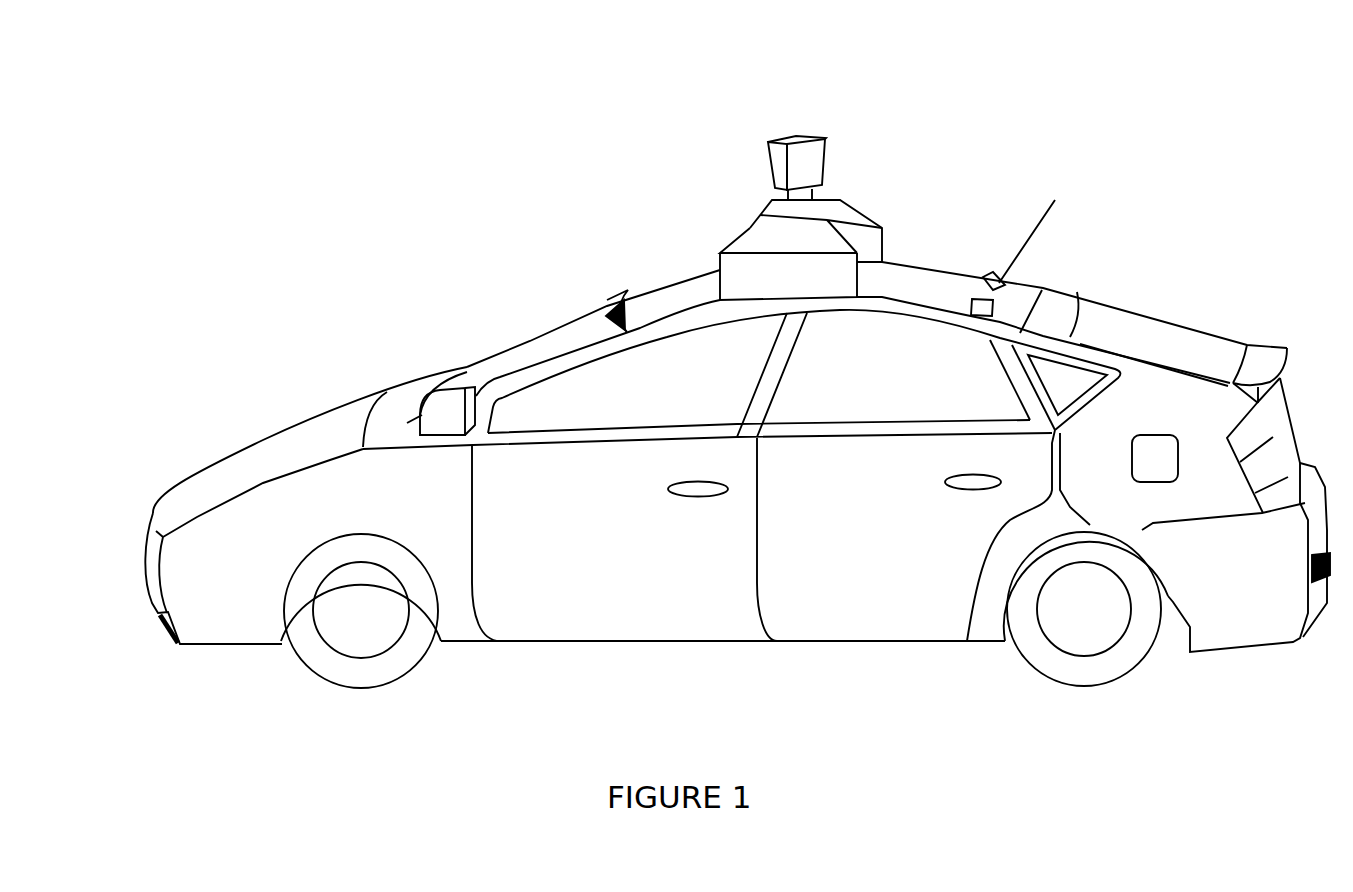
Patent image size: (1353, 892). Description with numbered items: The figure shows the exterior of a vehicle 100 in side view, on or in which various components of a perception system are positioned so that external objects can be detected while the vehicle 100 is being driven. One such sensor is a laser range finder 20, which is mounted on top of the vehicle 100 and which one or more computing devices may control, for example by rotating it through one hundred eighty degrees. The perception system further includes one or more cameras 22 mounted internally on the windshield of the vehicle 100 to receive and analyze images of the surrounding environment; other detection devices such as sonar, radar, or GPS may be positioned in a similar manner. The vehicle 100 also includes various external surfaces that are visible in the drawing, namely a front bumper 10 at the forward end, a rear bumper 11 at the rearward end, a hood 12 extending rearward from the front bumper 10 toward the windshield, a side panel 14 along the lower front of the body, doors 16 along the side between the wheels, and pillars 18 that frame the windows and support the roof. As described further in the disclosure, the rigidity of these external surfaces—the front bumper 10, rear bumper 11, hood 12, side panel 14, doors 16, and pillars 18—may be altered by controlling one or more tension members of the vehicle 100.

The vehicle 100 is at (421, 86).
The front bumper 10 is at (150, 533).
The rear bumper 11 is at (1288, 605).
The hood 12 is at (282, 438).
The side panel 14 is at (257, 603).
The doors 16 is at (607, 603).
The pillars 18 is at (507, 387).
The laser range finder 20 is at (775, 155).
The cameras 22 is at (606, 315).